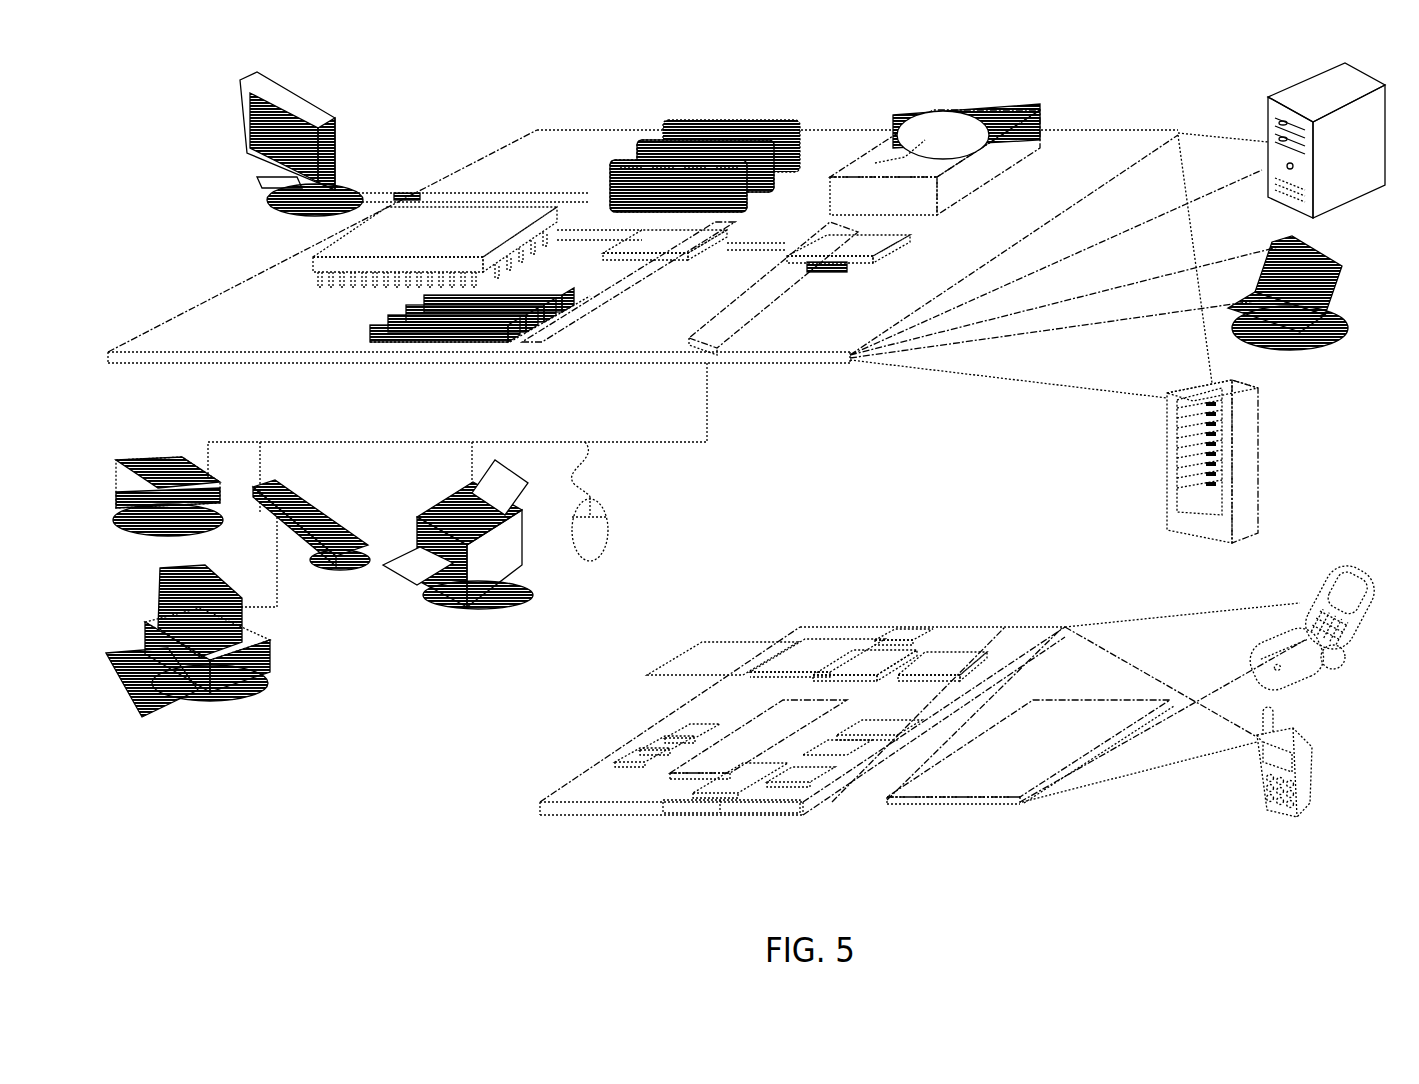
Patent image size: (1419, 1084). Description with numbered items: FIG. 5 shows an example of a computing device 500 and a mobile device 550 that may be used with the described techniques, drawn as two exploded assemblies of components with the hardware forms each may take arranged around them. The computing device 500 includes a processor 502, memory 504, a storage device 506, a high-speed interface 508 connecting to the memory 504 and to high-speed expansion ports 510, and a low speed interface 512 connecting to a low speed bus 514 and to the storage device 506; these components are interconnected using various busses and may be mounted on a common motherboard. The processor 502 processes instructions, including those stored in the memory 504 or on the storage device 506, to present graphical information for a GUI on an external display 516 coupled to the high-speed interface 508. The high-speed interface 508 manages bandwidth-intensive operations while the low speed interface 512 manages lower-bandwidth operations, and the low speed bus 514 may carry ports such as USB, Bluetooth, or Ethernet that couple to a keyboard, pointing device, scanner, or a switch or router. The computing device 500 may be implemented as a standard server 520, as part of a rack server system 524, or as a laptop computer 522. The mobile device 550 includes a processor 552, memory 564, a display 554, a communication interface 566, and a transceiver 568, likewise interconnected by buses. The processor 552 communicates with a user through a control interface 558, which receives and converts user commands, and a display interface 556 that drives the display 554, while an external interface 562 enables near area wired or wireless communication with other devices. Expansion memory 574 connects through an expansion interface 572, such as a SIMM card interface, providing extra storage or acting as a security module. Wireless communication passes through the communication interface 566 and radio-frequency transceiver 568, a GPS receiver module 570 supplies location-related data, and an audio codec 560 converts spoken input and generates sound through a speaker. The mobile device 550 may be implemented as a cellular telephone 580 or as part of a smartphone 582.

The computing device 500 is at (455, 104).
The processor 502 is at (313, 260).
The memory 504 is at (682, 121).
The storage device 506 is at (930, 108).
The high-speed interface 508 is at (640, 243).
The high-speed expansion ports 510 is at (387, 320).
The low speed interface 512 is at (827, 250).
The low speed bus 514 is at (717, 350).
The display 516 is at (247, 75).
The standard server 520 is at (1268, 118).
The laptop computer 522 is at (1333, 277).
The rack server system 524 is at (1167, 488).
The mobile device 550 is at (515, 810).
The processor 552 is at (732, 767).
The display 554 is at (985, 787).
The display interface 556 is at (800, 790).
The control interface 558 is at (850, 745).
The audio codec 560 is at (867, 767).
The external interface 562 is at (692, 800).
The memory 564 is at (650, 755).
The communication interface 566 is at (858, 667).
The transceiver 568 is at (943, 667).
The GPS receiver module 570 is at (925, 588).
The expansion interface 572 is at (780, 640).
The expansion memory 574 is at (703, 640).
The cellular telephone 580 is at (1295, 548).
The smartphone 582 is at (1257, 770).